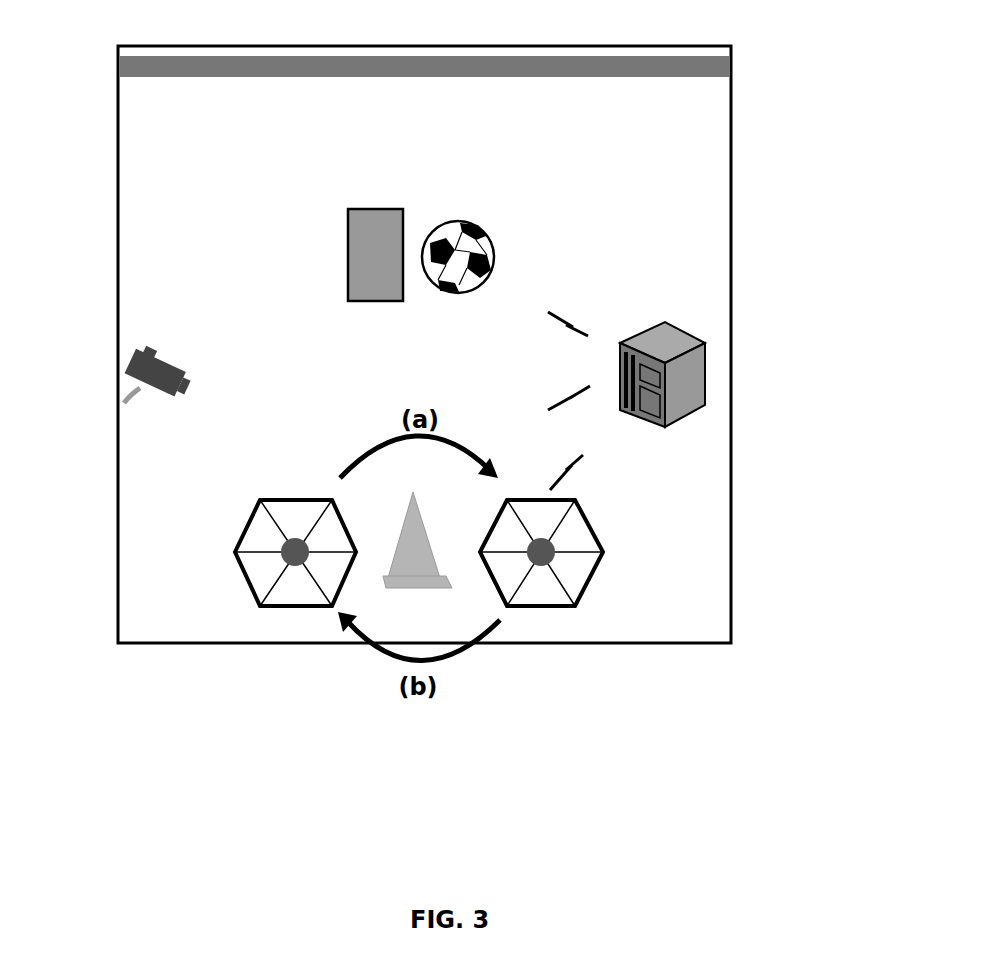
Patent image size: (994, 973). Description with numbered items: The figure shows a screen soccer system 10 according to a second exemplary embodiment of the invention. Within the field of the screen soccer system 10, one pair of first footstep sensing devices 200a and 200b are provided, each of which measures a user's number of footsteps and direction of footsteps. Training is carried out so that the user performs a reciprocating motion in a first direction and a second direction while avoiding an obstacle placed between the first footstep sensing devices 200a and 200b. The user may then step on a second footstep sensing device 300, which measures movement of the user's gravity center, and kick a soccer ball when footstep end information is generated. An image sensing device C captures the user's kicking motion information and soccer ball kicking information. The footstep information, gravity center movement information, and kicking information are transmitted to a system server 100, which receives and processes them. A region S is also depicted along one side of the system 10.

The screen soccer system 10 is at (55, 34).
The goal region S is at (740, 66).
The second footstep sensing device 300 is at (318, 267).
The image sensing device C is at (102, 371).
The system server 100 is at (722, 378).
The first footstep sensing device 200a is at (300, 633).
The first footstep sensing device 200b is at (546, 634).